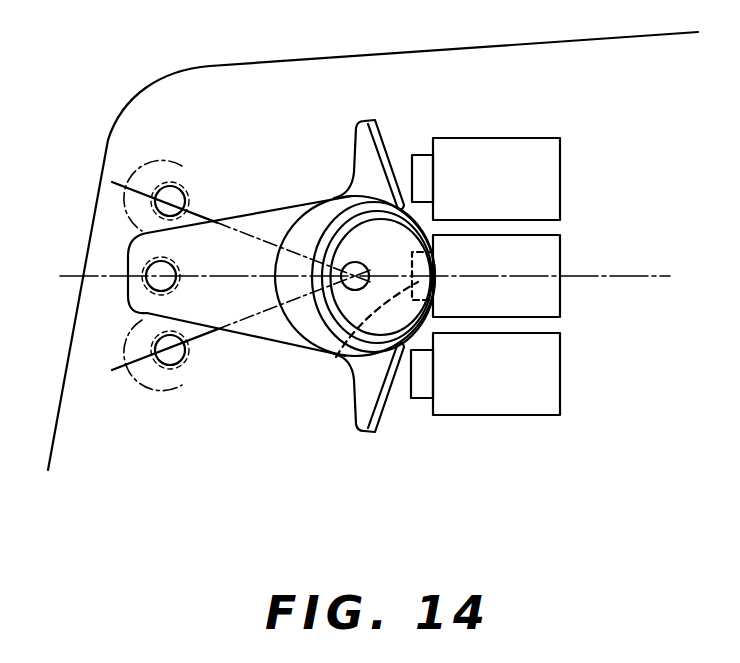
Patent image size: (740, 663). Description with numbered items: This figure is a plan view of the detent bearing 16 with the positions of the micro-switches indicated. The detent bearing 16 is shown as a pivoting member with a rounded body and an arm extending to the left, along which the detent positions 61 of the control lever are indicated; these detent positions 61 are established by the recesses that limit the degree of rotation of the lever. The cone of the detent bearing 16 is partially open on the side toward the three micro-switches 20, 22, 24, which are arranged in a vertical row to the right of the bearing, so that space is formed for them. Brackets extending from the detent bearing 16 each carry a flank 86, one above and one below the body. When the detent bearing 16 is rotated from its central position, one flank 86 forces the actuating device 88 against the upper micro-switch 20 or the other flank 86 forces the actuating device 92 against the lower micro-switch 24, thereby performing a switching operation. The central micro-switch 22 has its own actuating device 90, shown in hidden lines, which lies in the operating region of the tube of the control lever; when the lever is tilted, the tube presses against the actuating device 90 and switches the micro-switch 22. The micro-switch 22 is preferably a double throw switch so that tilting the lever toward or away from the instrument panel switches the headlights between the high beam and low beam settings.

The detent bearing 16 is at (265, 209).
The micro-switch 20 is at (552, 138).
The central micro-switch 22 is at (553, 257).
The micro-switch 24 is at (553, 377).
The detent positions 61 is at (118, 177).
The flank 86 is at (384, 124).
The actuating device 88 is at (420, 156).
The actuating device 90 is at (336, 356).
The actuating device 92 is at (420, 398).